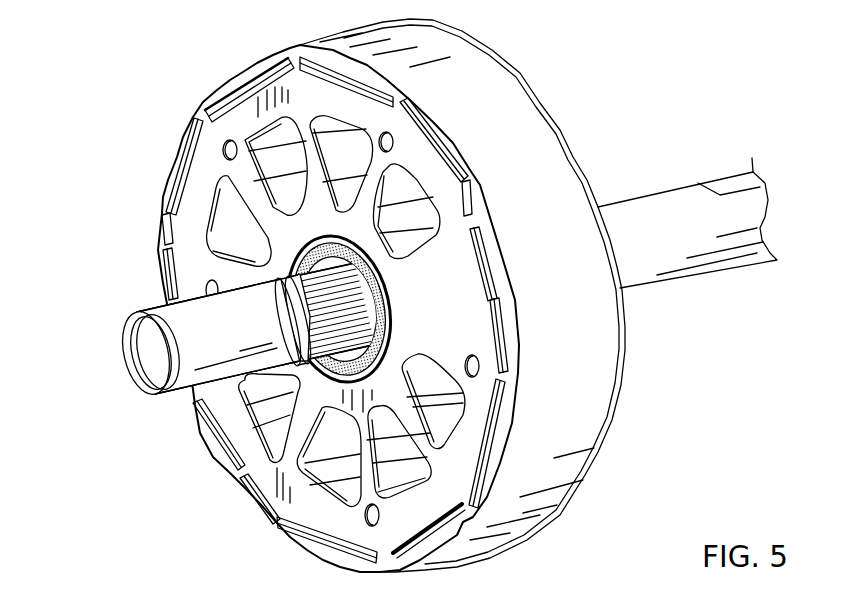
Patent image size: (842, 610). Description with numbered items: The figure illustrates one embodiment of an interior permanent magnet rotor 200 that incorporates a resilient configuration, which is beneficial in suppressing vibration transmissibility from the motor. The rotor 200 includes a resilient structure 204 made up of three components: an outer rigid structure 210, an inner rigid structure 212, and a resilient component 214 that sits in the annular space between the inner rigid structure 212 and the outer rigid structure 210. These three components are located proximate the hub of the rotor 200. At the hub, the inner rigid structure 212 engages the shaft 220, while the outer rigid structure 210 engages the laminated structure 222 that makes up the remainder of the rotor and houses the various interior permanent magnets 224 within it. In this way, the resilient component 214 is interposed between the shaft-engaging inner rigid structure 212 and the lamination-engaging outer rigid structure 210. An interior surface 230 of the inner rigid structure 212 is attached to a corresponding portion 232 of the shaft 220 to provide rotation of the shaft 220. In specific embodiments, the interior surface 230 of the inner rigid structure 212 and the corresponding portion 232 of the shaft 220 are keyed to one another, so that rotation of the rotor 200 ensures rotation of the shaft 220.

The interior permanent magnet rotor 200 is at (118, 327).
The resilient structure 204 is at (357, 250).
The outer rigid structure 210 is at (305, 250).
The inner rigid structure 212 is at (374, 338).
The resilient component 214 is at (390, 302).
The shaft 220 is at (143, 372).
The laminated structure 222 is at (300, 88).
The interior permanent magnets 224 is at (244, 75).
The interior surface 230 is at (333, 240).
The corresponding portion 232 is at (305, 292).